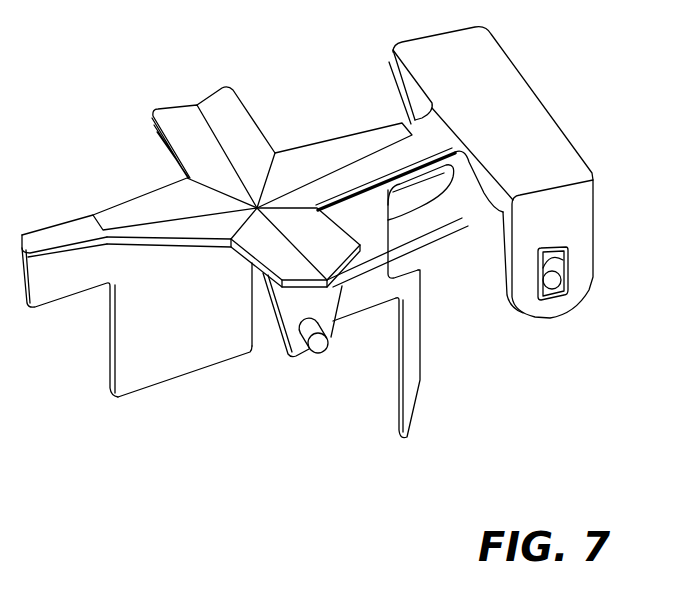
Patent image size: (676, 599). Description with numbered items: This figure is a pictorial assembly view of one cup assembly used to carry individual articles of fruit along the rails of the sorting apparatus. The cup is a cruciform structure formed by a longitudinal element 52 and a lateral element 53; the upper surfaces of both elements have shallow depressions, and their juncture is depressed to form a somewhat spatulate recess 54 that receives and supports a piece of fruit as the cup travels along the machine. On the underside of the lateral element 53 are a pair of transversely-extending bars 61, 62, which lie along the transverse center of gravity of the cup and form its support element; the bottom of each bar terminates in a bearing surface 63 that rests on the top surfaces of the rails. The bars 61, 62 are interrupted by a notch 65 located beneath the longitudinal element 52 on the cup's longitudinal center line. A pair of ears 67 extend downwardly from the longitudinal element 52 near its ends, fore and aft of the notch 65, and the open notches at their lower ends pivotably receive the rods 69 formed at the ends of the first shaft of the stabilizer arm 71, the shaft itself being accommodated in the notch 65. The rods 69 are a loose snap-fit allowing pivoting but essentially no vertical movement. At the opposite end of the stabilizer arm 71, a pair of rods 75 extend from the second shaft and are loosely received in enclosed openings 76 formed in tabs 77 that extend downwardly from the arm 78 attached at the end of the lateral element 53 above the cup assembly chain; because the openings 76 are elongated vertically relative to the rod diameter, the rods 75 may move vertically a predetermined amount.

The longitudinal element 52 is at (177, 113).
The lateral element 53 is at (132, 213).
The spatulate recess 54 is at (252, 168).
The transversely-extending bar 61 is at (140, 377).
The transversely-extending bar 62 is at (363, 297).
The bearing surface 63 is at (197, 373).
The notch 65 is at (265, 340).
The ear 67 is at (292, 297).
The rod 69 is at (317, 357).
The stabilizer arm 71 is at (438, 242).
The rod 75 is at (556, 289).
The enclosed opening 76 is at (570, 262).
The tab 77 is at (578, 252).
The arm 78 is at (497, 87).